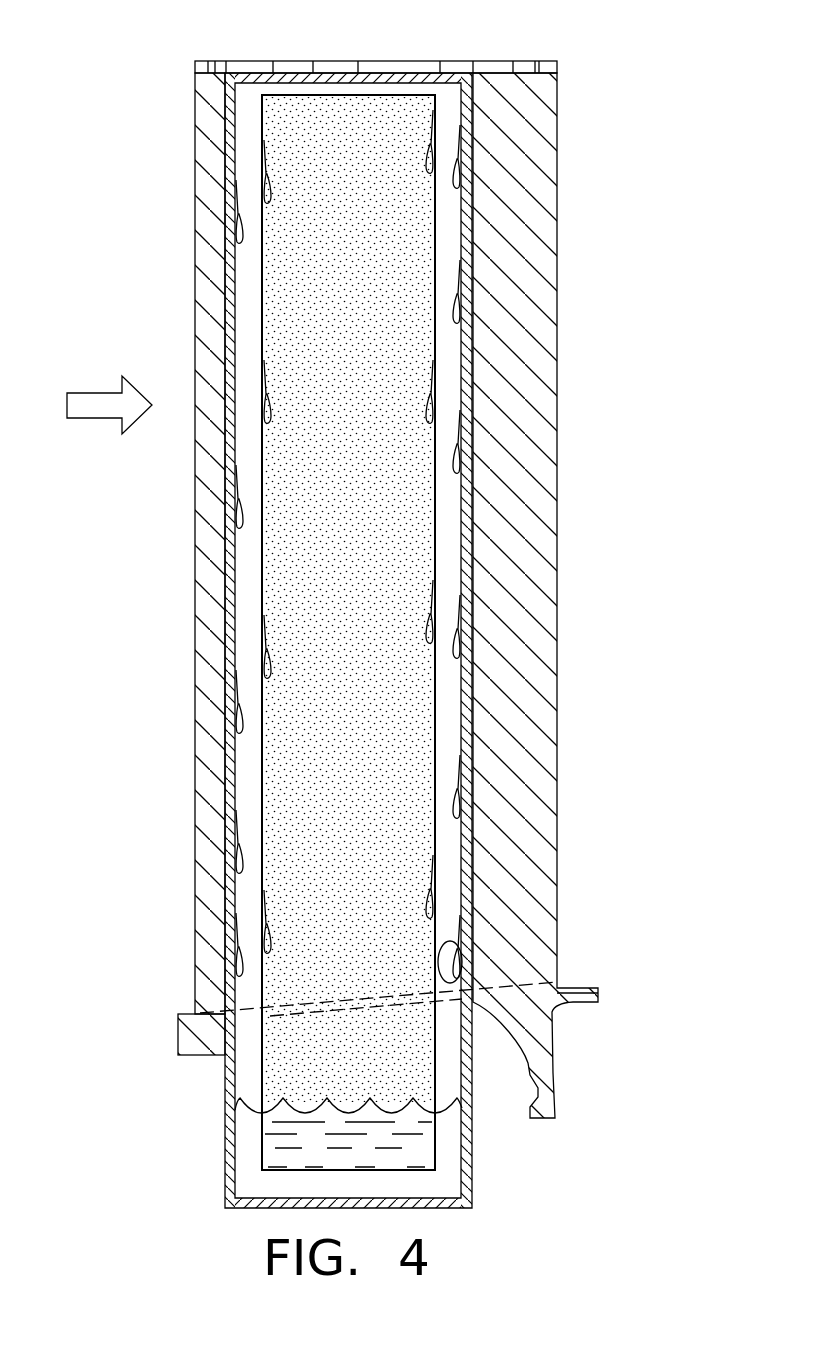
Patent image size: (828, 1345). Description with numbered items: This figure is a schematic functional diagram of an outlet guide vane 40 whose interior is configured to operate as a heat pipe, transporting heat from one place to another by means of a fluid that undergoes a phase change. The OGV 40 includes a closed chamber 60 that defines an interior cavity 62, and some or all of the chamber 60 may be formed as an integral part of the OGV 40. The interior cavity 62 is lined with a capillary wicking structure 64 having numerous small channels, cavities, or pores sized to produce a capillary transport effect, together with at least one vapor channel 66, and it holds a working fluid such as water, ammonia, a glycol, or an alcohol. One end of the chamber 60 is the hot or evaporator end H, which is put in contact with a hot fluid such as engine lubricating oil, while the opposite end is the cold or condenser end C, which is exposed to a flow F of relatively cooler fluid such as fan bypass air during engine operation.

The outlet guide vane 40 is at (587, 93).
The closed chamber 60 is at (265, 1021).
The interior cavity 62 is at (447, 947).
The wicking structure 64 is at (452, 876).
The vapor channel 66 is at (390, 767).
The condenser end C is at (592, 305).
The flow of cooler fluid F is at (98, 405).
The evaporator end H is at (170, 1200).